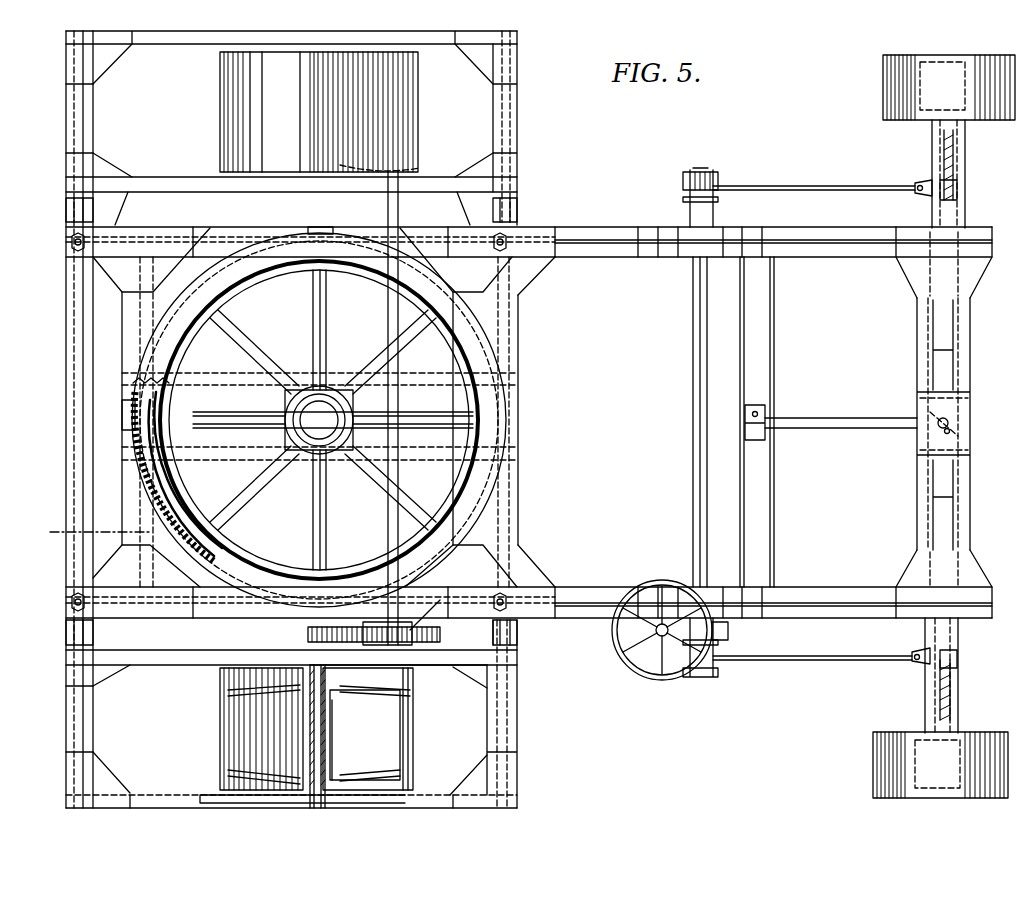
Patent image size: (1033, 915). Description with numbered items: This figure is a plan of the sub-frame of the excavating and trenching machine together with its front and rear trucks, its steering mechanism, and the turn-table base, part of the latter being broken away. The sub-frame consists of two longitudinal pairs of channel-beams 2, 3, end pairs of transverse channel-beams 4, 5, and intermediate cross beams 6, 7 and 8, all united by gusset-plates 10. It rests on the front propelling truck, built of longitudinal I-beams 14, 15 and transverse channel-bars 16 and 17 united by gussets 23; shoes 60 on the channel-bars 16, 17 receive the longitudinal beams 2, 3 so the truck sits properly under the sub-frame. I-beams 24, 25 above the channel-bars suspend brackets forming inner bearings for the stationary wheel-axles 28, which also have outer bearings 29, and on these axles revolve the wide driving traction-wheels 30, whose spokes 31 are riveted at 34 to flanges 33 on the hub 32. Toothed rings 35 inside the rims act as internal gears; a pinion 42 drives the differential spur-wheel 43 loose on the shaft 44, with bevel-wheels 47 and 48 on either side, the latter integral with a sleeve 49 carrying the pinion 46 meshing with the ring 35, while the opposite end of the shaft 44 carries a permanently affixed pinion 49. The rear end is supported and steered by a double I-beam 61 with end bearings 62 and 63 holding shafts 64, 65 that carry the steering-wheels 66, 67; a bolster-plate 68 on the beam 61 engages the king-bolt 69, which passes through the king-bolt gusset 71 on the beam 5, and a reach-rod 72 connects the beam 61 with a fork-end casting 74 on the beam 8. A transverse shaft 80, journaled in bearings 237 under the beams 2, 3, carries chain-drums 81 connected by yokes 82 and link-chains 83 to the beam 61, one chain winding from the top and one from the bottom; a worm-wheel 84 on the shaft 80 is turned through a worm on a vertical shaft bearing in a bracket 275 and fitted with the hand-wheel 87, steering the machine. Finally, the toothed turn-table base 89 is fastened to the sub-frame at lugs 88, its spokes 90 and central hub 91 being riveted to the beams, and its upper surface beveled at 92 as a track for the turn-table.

The longitudinal channel-beam 2 is at (600, 227).
The longitudinal channel-beam 3 is at (584, 587).
The transverse channel-beam 4 is at (66, 411).
The transverse channel-beam 5 is at (971, 329).
The intermediate cross beam 6 is at (122, 307).
The intermediate cross beam 7 is at (519, 311).
The intermediate cross beam 8 is at (775, 299).
The gusset-plate 10 is at (1000, 599).
The longitudinal I-beam 14 is at (172, 810).
The longitudinal I-beam 15 is at (170, 36).
The transverse channel-bar 16 is at (519, 120).
The transverse channel-bar 17 is at (66, 126).
The gusset 23 is at (289, 430).
The I-beam 24 is at (158, 658).
The I-beam 25 is at (150, 178).
The wheel-axle 28 is at (327, 743).
The outer bearing 29 is at (343, 806).
The driving traction-wheel 30 is at (423, 733).
The spoke 31 is at (370, 786).
The hub 32 is at (334, 715).
The flange 33 is at (286, 700).
The rivet 34 is at (286, 755).
The toothed ring 35 is at (366, 690).
The pinion 42 is at (308, 633).
The spur-wheel 43 is at (411, 633).
The shaft 44 is at (398, 214).
The pinion 46 is at (413, 693).
The bevel-wheel 47 is at (425, 613).
The bevel-wheel 48 is at (410, 668).
The pinion 49 is at (393, 167).
The shoe 60 is at (64, 211).
The double I-beam 61 is at (967, 153).
The bearing 62 is at (967, 187).
The bearing 63 is at (968, 125).
The shaft 64 is at (940, 691).
The shaft 65 is at (944, 153).
The traction and steering-wheel 66 is at (928, 765).
The traction and steering-wheel 67 is at (936, 87).
The bolster-plate 68 is at (955, 479).
The king-bolt 69 is at (960, 419).
The king-bolt gusset 71 is at (917, 443).
The reach-rod 72 is at (830, 430).
The fork-end casting 74 is at (766, 410).
The shaft 80 is at (693, 419).
The chain-drum 81 is at (716, 174).
The yoke 82 is at (916, 196).
The link-chain 83 is at (822, 186).
The worm-wheel 84 is at (718, 631).
The hand-wheel 87 is at (636, 672).
The lug 88 is at (320, 226).
The turn-table base 89 is at (140, 461).
The spoke 90 is at (328, 324).
The central hub 91 is at (285, 408).
The beveled surface 92 is at (319, 420).
The bearing 237 is at (713, 204).
The bracket 275 is at (624, 660).